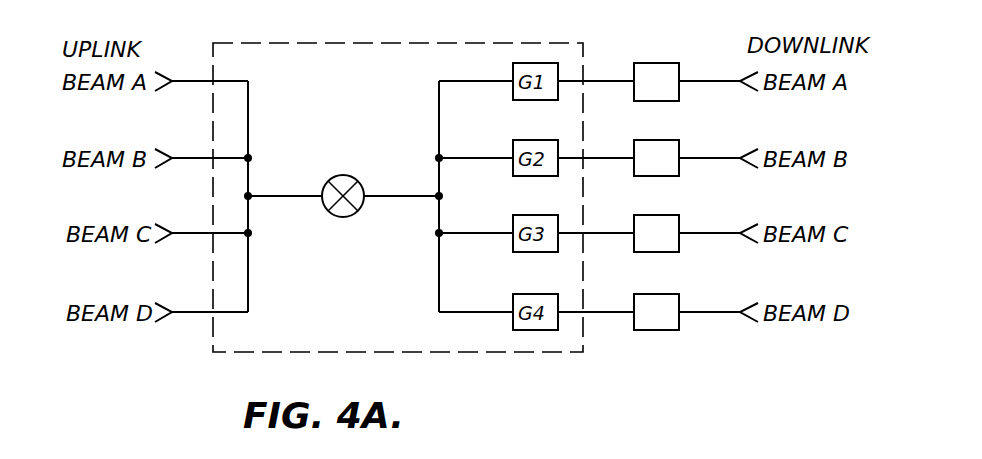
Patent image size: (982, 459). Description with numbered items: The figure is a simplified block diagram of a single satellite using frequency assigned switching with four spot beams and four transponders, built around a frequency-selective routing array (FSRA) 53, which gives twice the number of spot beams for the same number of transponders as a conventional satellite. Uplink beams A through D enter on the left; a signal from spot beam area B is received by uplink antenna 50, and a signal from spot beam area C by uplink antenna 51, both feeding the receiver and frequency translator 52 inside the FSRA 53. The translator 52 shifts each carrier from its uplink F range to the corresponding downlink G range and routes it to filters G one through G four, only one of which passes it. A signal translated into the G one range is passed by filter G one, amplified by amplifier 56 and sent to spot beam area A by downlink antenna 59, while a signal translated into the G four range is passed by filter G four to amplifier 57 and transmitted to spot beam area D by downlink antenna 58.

The uplink antenna 50 is at (163, 170).
The uplink antenna 51 is at (163, 244).
The receiver and frequency translator 52 is at (345, 173).
The frequency-selective routing array (FSRA) 53 is at (420, 42).
The amplifier 56 is at (658, 63).
The amplifier 57 is at (656, 330).
The downlink antenna 58 is at (754, 322).
The downlink antenna 59 is at (754, 74).